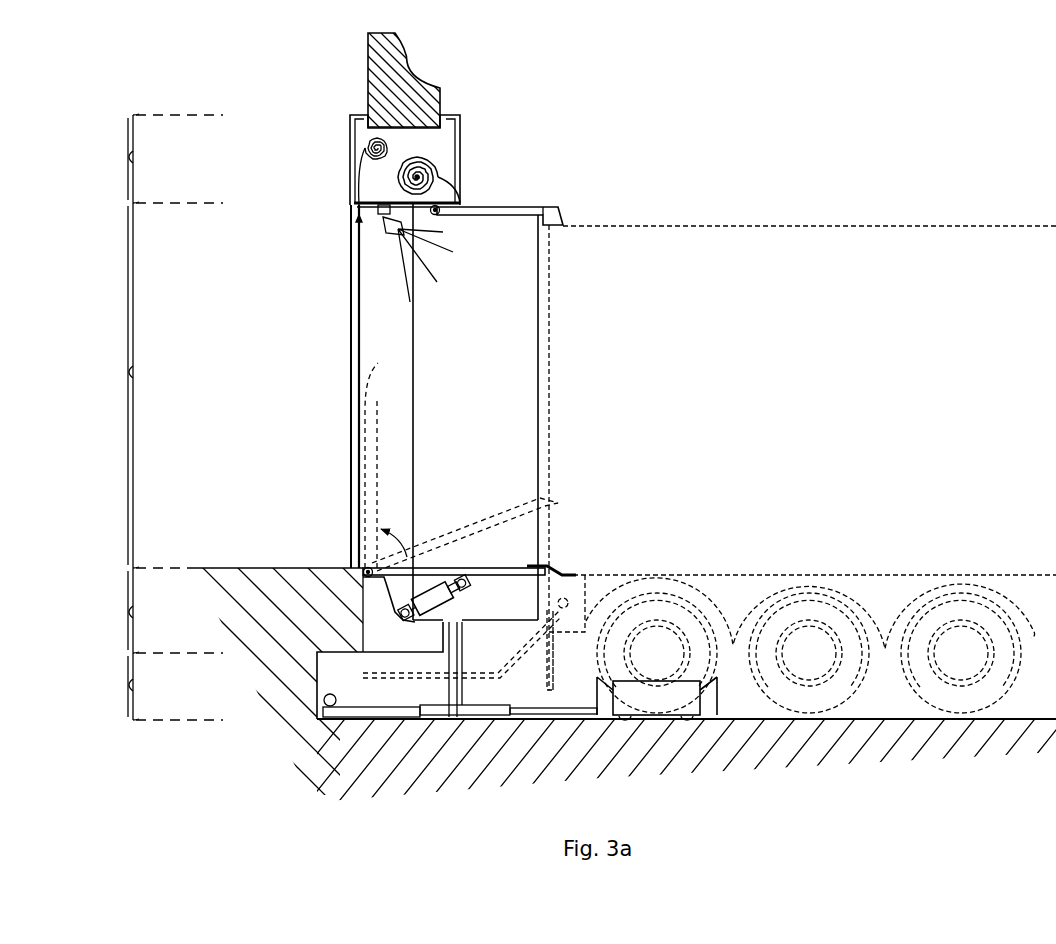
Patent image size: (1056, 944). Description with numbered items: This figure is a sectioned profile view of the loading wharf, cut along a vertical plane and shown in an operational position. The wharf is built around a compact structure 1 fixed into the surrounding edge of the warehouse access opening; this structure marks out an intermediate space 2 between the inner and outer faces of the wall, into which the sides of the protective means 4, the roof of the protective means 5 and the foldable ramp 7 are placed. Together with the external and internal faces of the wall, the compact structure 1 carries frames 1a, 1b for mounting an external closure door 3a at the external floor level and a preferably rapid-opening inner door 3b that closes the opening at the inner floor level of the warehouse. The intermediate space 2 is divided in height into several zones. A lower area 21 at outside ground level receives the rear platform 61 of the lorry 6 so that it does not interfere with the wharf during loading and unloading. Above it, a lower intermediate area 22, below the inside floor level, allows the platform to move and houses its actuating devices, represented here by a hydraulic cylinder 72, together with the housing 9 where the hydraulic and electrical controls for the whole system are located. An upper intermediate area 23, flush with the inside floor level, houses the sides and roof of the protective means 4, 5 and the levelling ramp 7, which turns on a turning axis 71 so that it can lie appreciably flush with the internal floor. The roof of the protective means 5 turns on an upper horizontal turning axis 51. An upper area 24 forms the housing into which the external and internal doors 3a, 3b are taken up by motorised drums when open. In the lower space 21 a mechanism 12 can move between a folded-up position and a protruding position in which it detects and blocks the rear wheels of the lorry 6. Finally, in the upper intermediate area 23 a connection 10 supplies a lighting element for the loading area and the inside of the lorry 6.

The compact structure 1 is at (463, 150).
The frame 1a is at (455, 695).
The frame 1b is at (357, 314).
The intermediate space 2 is at (387, 343).
The external closure door 3a is at (438, 198).
The inner door 3b is at (360, 143).
The sides of the protective means 4 is at (513, 240).
The roof of the protective means 5 is at (508, 211).
The lorry 6 is at (833, 257).
The foldable ramp 7 is at (503, 574).
The housing 9 is at (378, 620).
The connection 10 is at (382, 227).
The mechanism 12 is at (637, 698).
The lower area 21 is at (111, 686).
The lower intermediate area 22 is at (111, 610).
The upper intermediate area 23 is at (111, 385).
The upper area 24 is at (111, 159).
The upper turning horizontal axis 51 is at (432, 214).
The rear platform 61 is at (427, 672).
The turning axis 71 is at (366, 569).
The hydraulic cylinder 72 is at (433, 600).